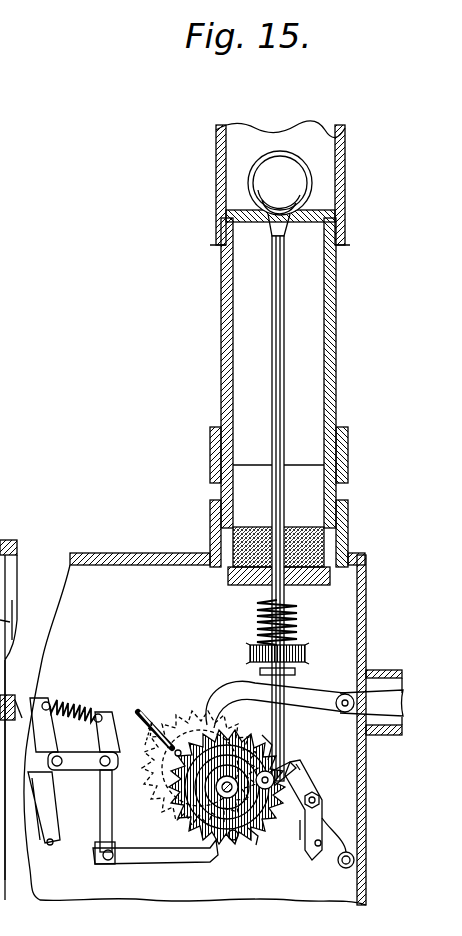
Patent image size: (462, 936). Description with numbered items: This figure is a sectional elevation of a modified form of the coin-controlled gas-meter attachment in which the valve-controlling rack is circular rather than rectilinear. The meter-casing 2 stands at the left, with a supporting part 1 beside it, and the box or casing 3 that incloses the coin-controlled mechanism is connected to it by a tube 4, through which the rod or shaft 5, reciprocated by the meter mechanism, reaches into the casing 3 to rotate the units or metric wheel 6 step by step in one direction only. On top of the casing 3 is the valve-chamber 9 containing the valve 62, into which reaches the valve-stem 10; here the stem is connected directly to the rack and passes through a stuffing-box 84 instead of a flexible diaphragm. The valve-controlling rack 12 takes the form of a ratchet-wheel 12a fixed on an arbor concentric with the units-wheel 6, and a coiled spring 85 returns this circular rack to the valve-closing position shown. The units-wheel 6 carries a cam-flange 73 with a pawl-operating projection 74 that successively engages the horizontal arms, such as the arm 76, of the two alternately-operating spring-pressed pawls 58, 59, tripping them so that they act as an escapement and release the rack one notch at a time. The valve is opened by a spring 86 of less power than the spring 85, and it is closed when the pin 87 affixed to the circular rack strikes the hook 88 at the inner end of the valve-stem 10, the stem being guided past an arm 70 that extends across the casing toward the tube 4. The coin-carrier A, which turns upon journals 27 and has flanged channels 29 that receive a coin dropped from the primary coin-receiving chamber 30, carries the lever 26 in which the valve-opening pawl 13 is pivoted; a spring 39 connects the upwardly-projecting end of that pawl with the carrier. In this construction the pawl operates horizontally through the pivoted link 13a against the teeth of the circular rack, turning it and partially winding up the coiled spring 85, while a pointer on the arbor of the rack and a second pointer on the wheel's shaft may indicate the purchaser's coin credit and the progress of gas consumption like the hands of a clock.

The support 1 is at (10, 779).
The meter-casing 2 is at (14, 710).
The box or casing 3 is at (132, 556).
The tube 4 is at (384, 693).
The rod or shaft 5 is at (369, 703).
The units or metric wheel 6 is at (200, 722).
The valve-chamber 9 is at (280, 183).
The valve-stem 10 is at (279, 392).
The valve-controlling rack 12 is at (205, 777).
The ratchet-wheel (circular valve-controlling rack) 12a is at (261, 733).
The pawl 13 is at (96, 815).
The pivoted link 13a is at (155, 861).
The lever 26 is at (83, 760).
The journals 27 is at (60, 752).
The flanged channels 29 is at (51, 846).
The primary coin-receiving chamber 30 is at (232, 840).
The spring 39 is at (72, 701).
The spring-pressed pawl or click 58 is at (315, 790).
The spring-pressed pawl or click 59 is at (303, 768).
The valve 62 is at (280, 193).
The lever arm 70 is at (275, 701).
The cam-flange 73 is at (325, 822).
The pawl-operating projection 74 is at (170, 728).
The horizontal arm 76 is at (318, 847).
The stuffing-box 84 is at (328, 578).
The coiled spring 85 is at (258, 838).
The spring 86 is at (282, 508).
The pin 87 is at (278, 770).
The hook 88 is at (292, 812).
The coin-carrier A is at (54, 790).